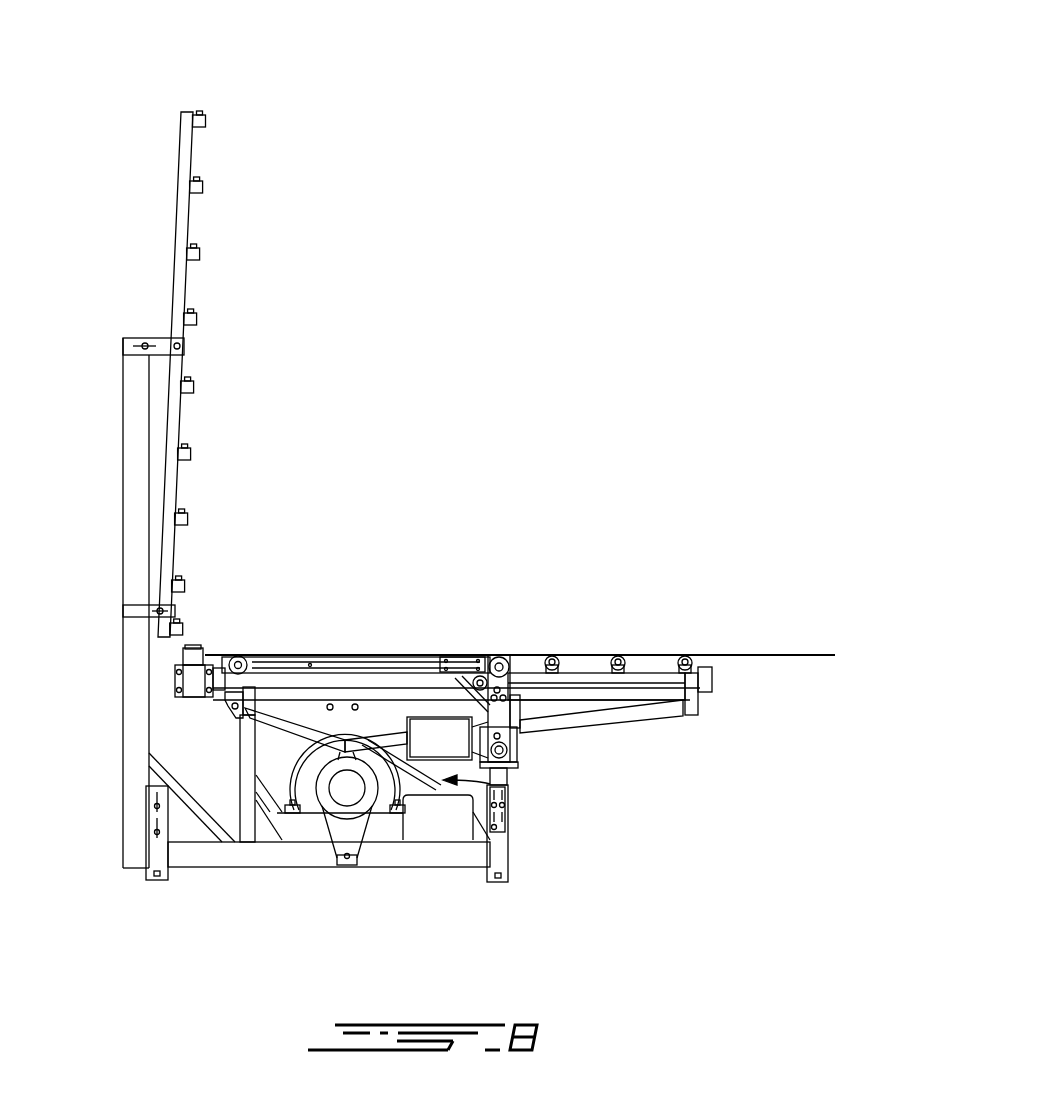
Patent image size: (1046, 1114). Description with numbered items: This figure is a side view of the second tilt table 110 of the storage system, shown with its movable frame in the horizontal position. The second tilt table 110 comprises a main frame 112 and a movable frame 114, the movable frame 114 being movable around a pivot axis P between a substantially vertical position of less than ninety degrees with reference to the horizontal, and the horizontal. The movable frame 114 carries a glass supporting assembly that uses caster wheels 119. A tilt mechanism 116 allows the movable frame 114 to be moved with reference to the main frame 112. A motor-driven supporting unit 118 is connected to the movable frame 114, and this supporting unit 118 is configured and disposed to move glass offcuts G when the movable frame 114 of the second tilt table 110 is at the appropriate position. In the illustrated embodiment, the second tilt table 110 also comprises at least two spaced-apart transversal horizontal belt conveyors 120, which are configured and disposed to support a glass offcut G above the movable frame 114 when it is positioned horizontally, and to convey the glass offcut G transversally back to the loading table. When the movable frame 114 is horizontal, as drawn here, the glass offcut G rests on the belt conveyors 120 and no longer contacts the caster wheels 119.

The second tilt table 110 is at (138, 208).
The main frame 112 is at (138, 700).
The movable frame 114 is at (652, 712).
The tilt mechanism 116 is at (507, 802).
The motor-driven supporting unit 118 is at (193, 703).
The caster wheels 119 is at (618, 655).
The transversal horizontal belt conveyors 120 is at (530, 763).
The pivot axis P is at (243, 703).
The glass offcut G is at (751, 652).